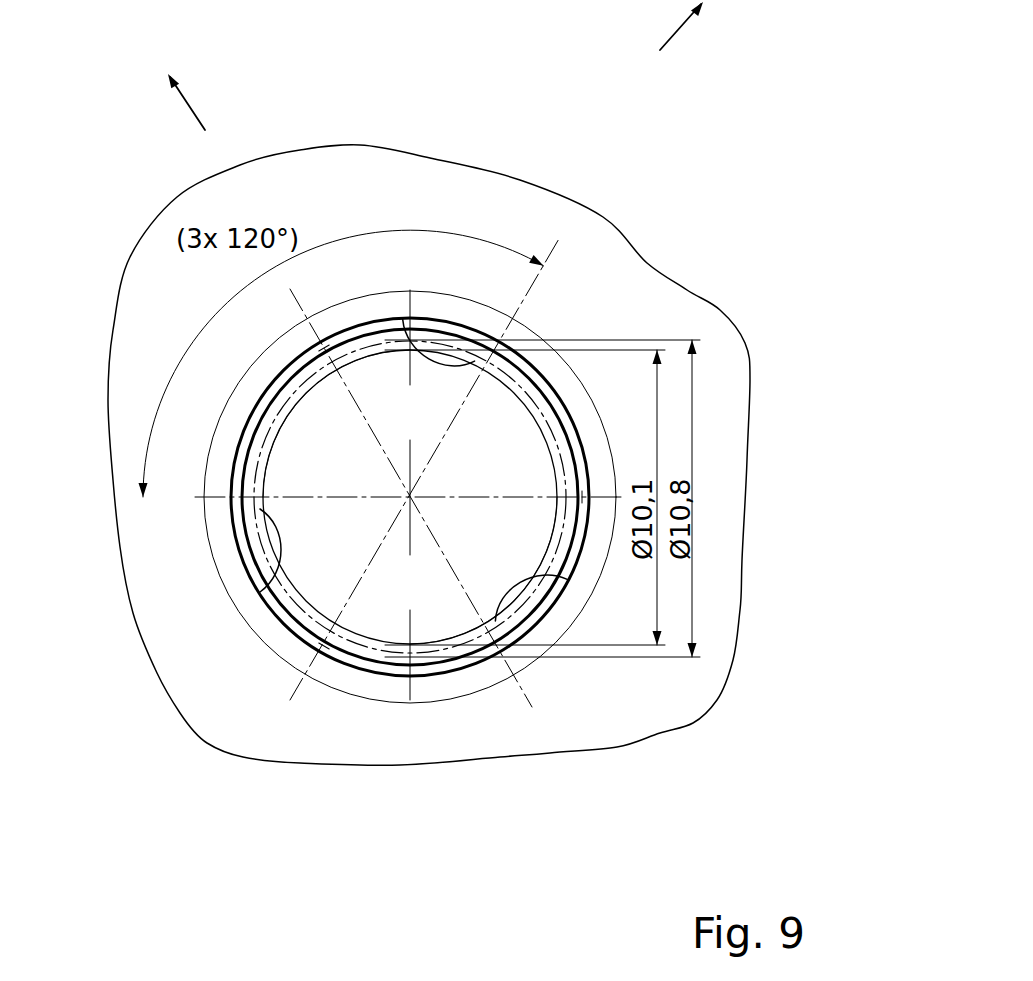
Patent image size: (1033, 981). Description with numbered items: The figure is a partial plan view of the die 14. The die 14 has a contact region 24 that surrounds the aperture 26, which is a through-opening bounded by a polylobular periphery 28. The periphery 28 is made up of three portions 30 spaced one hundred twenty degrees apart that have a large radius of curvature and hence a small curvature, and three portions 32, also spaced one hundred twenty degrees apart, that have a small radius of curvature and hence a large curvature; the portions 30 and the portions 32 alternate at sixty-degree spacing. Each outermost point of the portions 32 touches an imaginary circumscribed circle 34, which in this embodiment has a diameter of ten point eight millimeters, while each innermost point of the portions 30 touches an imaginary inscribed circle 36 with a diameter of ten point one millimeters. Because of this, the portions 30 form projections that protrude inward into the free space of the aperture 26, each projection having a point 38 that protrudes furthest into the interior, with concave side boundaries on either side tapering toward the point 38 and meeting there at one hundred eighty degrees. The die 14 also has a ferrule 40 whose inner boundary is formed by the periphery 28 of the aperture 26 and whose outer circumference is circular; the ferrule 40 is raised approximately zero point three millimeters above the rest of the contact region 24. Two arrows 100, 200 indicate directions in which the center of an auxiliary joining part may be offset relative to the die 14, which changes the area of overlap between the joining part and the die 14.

The die 14 is at (664, 733).
The contact region 24 is at (553, 715).
The aperture 26 is at (438, 617).
The polylobular periphery 28 is at (282, 588).
The portions with a small curvature 30 is at (495, 365).
The portions with a large curvature 32 is at (328, 348).
The circumscribed circle 34 is at (518, 380).
The inscribed circle 36 is at (553, 455).
The point 38 is at (487, 372).
The ferrule 40 is at (560, 545).
The arrow 100 is at (690, 34).
The arrow 200 is at (205, 102).